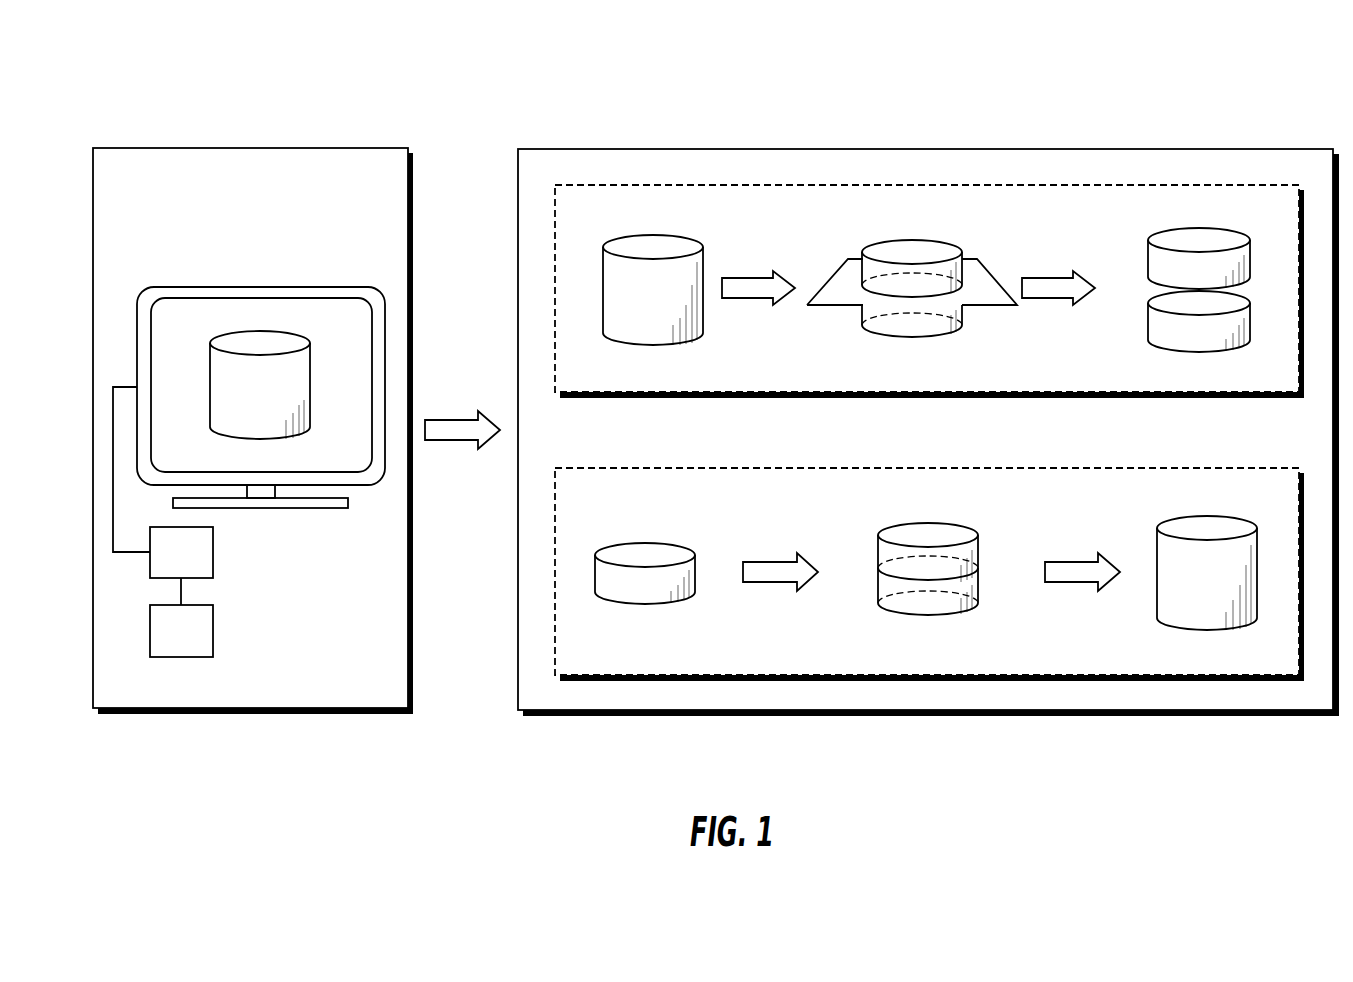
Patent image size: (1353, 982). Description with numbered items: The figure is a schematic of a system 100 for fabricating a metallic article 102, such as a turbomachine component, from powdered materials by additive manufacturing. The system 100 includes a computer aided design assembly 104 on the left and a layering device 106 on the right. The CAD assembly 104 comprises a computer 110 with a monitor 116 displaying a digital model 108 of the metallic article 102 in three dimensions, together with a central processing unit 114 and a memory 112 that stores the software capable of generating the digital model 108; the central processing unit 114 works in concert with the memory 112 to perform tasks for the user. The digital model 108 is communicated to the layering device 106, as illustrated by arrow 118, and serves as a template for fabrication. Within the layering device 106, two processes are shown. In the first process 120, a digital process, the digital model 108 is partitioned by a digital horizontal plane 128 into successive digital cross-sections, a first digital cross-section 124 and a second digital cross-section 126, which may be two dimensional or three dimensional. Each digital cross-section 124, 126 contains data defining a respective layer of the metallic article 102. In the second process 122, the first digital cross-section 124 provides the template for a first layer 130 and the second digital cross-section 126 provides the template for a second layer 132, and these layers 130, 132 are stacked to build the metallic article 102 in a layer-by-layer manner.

The system 100 is at (156, 70).
The metallic article 102 is at (1157, 597).
The computer aided design (CAD) assembly 104 is at (240, 148).
The layering device 106 is at (622, 149).
The digital model 108 is at (652, 235).
The computer 110 is at (173, 260).
The memory 112 is at (202, 645).
The central processing unit 114 is at (202, 566).
The monitor 116 is at (311, 287).
The arrow 118 is at (445, 420).
The first process 120 is at (592, 185).
The second process 122 is at (592, 468).
The first digital cross-section 124 is at (862, 315).
The second digital cross-section 126 is at (912, 240).
The digital horizontal plane 128 is at (834, 276).
The first layer 130 is at (645, 543).
The second layer 132 is at (878, 553).